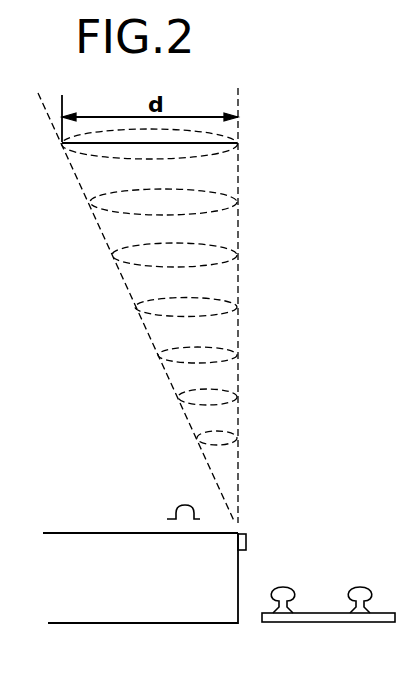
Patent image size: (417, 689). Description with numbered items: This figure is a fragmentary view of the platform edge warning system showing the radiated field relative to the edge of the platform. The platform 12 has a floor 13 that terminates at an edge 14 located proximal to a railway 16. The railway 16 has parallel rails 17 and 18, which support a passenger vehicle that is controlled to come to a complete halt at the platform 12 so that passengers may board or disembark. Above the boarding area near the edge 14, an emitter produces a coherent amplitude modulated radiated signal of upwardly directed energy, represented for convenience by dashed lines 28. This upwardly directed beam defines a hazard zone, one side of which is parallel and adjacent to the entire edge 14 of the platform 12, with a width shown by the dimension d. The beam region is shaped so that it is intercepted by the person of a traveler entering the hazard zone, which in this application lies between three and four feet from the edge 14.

The platform 12 is at (112, 602).
The floor 13 is at (80, 533).
The edge 14 is at (239, 578).
The railway 16 is at (328, 617).
The rail 17 is at (300, 588).
The rail 18 is at (370, 588).
The dashed lines 28 is at (92, 207).